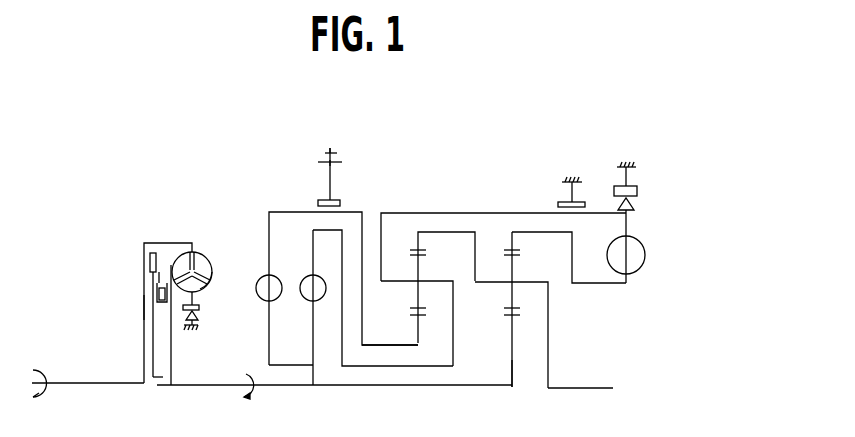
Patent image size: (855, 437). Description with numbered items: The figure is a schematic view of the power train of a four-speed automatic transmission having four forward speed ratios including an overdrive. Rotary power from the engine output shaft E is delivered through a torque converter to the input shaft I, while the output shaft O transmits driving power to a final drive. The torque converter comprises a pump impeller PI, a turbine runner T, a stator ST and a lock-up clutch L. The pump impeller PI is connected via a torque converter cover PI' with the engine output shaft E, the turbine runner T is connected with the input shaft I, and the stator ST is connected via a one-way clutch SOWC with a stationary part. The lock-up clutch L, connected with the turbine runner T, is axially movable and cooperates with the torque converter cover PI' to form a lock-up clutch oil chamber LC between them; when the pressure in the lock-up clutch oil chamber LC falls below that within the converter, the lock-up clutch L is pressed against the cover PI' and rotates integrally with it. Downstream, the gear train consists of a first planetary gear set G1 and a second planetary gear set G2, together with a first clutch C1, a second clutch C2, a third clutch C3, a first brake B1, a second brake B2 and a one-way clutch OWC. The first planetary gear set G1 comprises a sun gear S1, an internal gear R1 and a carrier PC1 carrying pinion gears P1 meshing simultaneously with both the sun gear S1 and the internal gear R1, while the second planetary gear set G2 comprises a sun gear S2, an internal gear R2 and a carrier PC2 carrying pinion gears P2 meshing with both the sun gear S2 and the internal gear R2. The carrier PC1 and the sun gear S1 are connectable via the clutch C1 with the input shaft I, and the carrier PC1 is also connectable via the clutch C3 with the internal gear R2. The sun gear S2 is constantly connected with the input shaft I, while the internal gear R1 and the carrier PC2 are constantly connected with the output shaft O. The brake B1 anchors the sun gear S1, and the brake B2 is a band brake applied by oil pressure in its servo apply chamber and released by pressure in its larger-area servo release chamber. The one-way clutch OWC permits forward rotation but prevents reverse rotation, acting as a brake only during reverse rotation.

The engine output shaft E is at (100, 382).
The input shaft I is at (215, 388).
The output shaft O is at (593, 387).
The pump impeller PI is at (223, 272).
The turbine runner T is at (171, 265).
The stator ST is at (202, 290).
The one-way clutch SOWC is at (199, 309).
The lock-up clutch oil chamber LC is at (148, 288).
The torque converter cover PI' is at (119, 302).
The lock-up clutch L is at (158, 345).
The first clutch C1 is at (337, 288).
The second clutch C2 is at (376, 307).
The third clutch C3 is at (626, 246).
The first brake B1 is at (574, 195).
The second brake B2 is at (344, 177).
The one-way clutch OWC is at (637, 192).
The first planetary gear set G1 is at (411, 229).
The second planetary gear set G2 is at (506, 232).
The internal gear R1 is at (420, 241).
The internal gear R2 is at (514, 240).
The pinion gears P1 is at (415, 295).
The pinion gears P2 is at (510, 292).
The carrier PC1 is at (433, 267).
The carrier PC2 is at (526, 267).
The sun gear S1 is at (420, 333).
The sun gear S2 is at (512, 370).